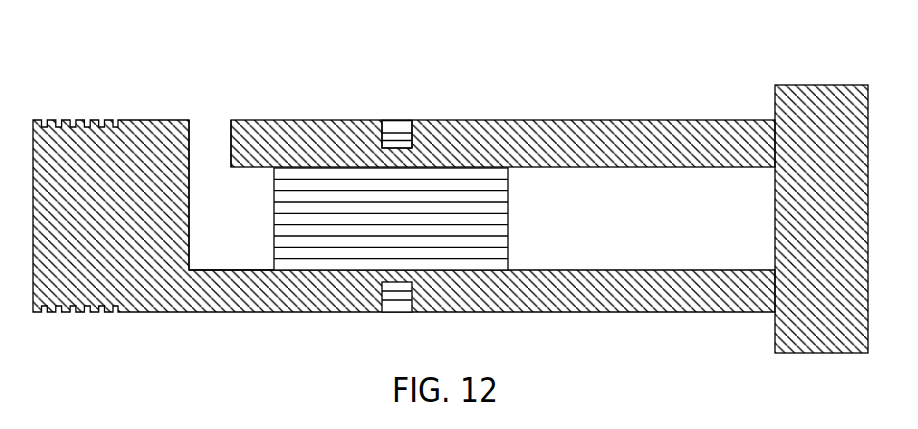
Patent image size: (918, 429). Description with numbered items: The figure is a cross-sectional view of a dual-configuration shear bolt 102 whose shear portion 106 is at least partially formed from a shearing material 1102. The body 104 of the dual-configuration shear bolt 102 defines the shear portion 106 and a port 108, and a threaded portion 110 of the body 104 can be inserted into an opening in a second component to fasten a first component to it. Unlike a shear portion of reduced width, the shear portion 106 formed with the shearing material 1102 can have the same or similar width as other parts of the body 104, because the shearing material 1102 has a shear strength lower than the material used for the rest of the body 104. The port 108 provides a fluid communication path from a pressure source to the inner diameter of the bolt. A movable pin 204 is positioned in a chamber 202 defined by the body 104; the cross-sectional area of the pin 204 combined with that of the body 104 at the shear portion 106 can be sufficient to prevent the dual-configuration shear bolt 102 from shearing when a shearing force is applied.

The dual-configuration shear bolt 102 is at (774, 46).
The body 104 is at (540, 115).
The shear portion 106 is at (398, 97).
The port 108 is at (198, 115).
The threaded portion 110 is at (91, 104).
The chamber 202 is at (218, 260).
The pin 204 is at (266, 203).
The shearing material 1102 is at (391, 125).